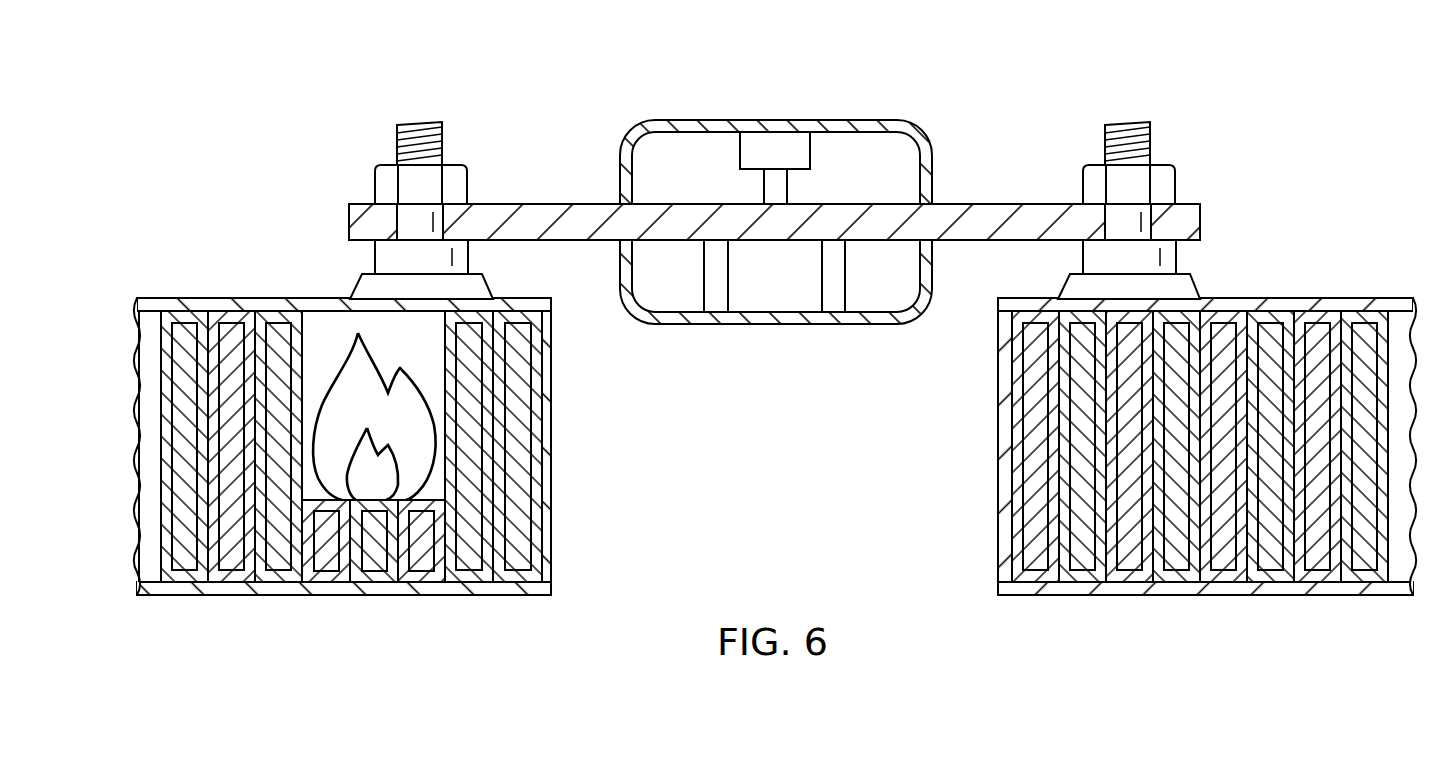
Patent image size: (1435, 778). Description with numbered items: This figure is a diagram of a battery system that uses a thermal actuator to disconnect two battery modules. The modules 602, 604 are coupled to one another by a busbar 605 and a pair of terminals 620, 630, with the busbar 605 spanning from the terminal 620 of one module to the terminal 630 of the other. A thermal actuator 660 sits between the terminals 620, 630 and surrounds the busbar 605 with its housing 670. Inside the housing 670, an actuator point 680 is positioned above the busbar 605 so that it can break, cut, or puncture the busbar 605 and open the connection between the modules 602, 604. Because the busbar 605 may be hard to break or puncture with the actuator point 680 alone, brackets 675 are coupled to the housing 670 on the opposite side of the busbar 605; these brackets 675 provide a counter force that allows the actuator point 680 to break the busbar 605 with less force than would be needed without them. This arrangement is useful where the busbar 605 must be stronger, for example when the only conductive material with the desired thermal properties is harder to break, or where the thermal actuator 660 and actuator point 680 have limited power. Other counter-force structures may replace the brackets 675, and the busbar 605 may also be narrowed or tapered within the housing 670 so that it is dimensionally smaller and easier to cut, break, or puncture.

The module 602 is at (240, 262).
The module 604 is at (1311, 262).
The busbar 605 is at (545, 203).
The terminal 620 is at (420, 123).
The terminal 630 is at (1130, 123).
The thermal actuator 660 is at (776, 180).
The housing 670 is at (781, 119).
The brackets 675 is at (822, 278).
The actuator point 680 is at (740, 152).